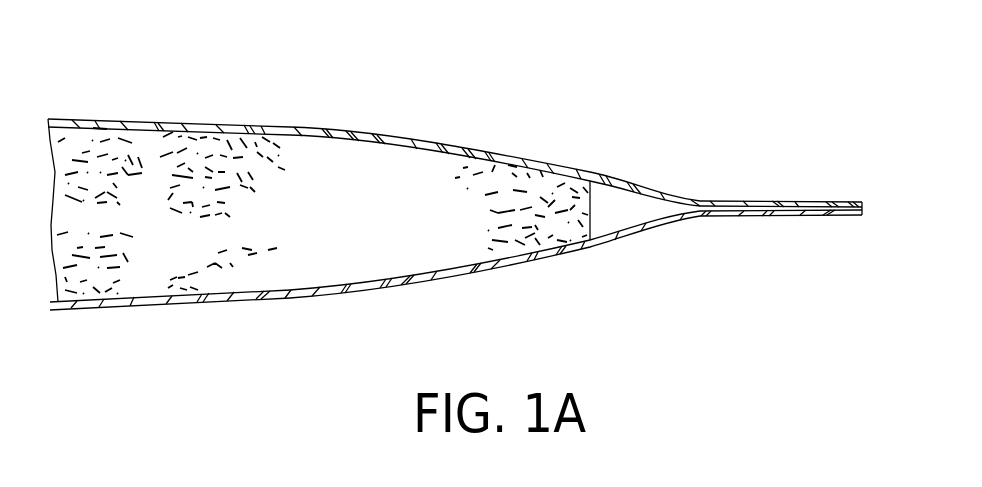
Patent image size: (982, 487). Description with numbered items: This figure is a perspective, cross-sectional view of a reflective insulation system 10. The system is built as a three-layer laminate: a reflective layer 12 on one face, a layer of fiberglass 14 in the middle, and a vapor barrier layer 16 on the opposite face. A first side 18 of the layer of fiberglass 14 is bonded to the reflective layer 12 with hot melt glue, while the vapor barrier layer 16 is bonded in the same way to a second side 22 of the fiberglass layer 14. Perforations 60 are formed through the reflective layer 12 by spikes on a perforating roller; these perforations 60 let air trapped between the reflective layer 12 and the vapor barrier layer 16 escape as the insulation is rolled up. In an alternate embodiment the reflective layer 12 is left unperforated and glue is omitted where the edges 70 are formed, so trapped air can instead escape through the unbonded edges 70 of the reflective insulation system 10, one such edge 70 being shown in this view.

The reflective insulation system 10 is at (566, 51).
The reflective layer 12 is at (463, 148).
The layer of fiberglass 14 is at (552, 185).
The vapor barrier layer 16 is at (393, 287).
The first side 18 is at (143, 121).
The second side 22 is at (212, 302).
The perforations 60 is at (385, 137).
The edges 70 is at (782, 202).